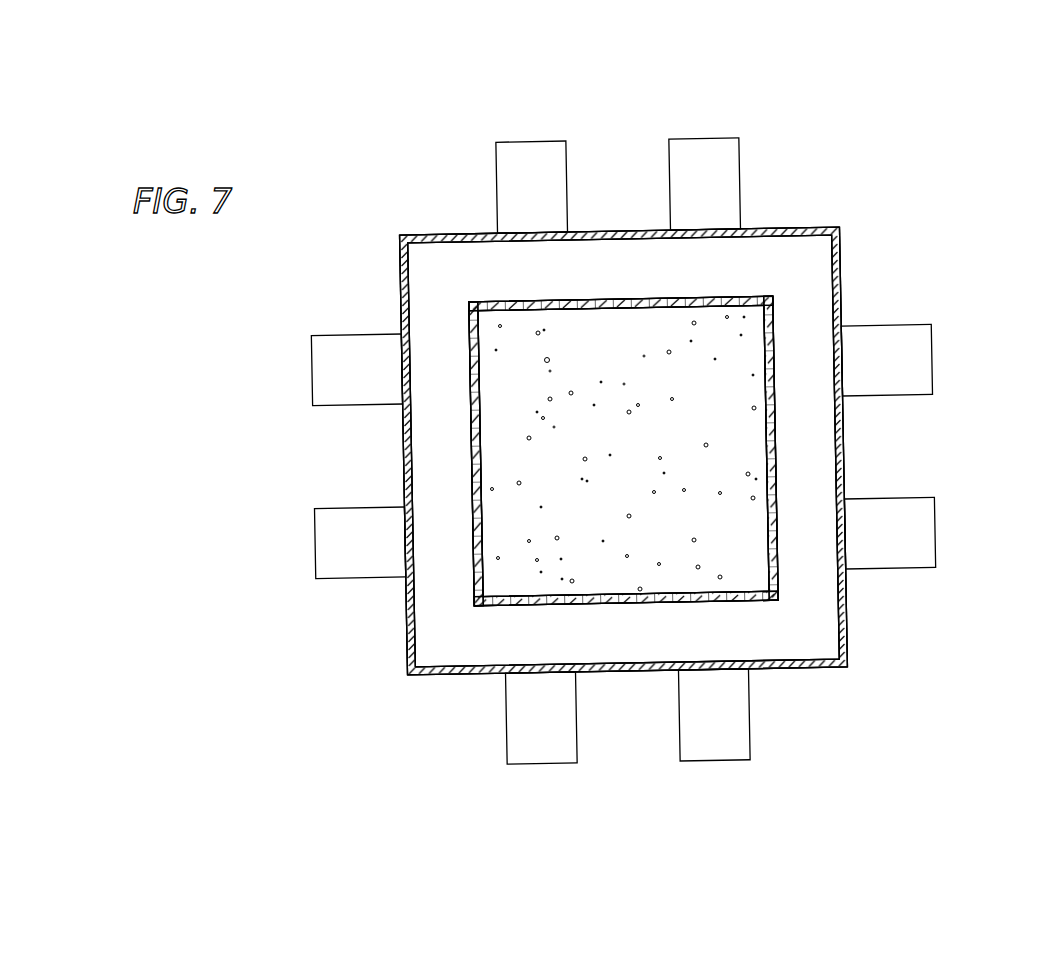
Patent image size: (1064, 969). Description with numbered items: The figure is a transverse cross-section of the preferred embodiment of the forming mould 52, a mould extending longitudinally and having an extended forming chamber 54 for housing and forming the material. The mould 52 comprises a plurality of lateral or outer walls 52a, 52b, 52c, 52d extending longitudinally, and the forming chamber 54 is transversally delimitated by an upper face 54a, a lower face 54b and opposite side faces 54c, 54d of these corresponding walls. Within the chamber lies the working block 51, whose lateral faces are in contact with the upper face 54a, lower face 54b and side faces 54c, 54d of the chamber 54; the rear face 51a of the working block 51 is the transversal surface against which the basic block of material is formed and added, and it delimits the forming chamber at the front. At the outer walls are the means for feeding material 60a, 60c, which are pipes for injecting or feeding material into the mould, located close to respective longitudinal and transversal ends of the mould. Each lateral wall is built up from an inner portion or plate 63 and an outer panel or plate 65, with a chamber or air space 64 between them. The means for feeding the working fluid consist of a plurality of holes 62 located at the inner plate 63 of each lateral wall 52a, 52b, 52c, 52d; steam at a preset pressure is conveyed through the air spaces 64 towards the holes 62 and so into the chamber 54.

The working block 51 is at (733, 343).
The rear face of the working block 51a is at (602, 451).
The forming mould 52 is at (373, 217).
The lateral wall of the mould 52a is at (764, 190).
The lateral wall of the mould 52b is at (824, 688).
The lateral wall of the mould 52c is at (886, 472).
The lateral wall of the mould 52d is at (310, 456).
The forming chamber 54 is at (723, 319).
The upper face of the forming chamber 54a is at (624, 311).
The lower face of the forming chamber 54b is at (595, 592).
The side face of the forming chamber 54c is at (762, 525).
The side face of the forming chamber 54d is at (485, 526).
The means for feeding material 60a is at (705, 160).
The means for feeding material 60c is at (530, 167).
The holes 62 is at (573, 303).
The inner plate 63 is at (604, 304).
The air space 64 is at (436, 253).
The outer plate 65 is at (477, 233).